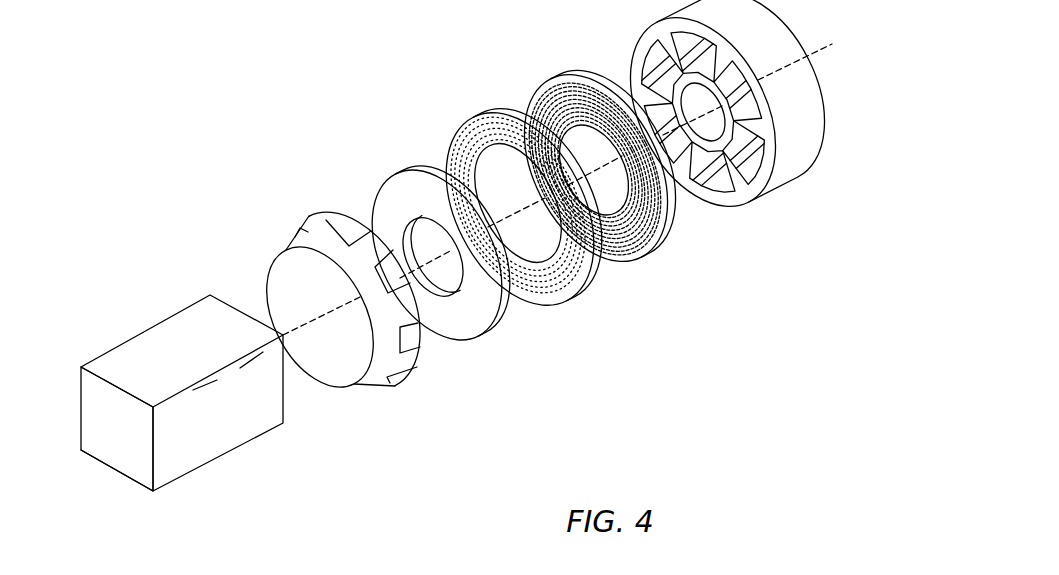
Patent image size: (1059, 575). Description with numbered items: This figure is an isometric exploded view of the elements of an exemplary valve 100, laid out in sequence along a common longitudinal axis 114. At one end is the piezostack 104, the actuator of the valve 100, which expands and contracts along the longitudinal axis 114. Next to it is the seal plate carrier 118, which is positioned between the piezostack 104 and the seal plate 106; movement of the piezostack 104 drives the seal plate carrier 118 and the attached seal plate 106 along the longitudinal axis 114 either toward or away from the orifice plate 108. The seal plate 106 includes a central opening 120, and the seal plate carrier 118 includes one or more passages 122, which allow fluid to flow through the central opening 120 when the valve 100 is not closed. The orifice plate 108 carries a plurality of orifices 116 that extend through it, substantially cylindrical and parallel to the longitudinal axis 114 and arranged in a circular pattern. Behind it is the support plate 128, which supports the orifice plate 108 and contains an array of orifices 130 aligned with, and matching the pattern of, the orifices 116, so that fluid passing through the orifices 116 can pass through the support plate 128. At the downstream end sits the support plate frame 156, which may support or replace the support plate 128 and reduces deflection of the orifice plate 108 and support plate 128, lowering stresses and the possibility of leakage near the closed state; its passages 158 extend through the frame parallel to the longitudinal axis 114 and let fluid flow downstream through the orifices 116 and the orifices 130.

The valve 100 is at (185, 95).
The piezostack 104 is at (207, 445).
The seal plate 106 is at (460, 323).
The orifice plate 108 is at (465, 127).
The longitudinal axis 114 is at (118, 432).
The orifices 116 is at (550, 300).
The seal plate carrier 118 is at (342, 368).
The central opening 120 is at (438, 272).
The passages 122 is at (353, 237).
The support plate 128 is at (532, 87).
The orifices 130 is at (623, 253).
The support plate frame 156 is at (793, 147).
The passages 158 is at (645, 42).